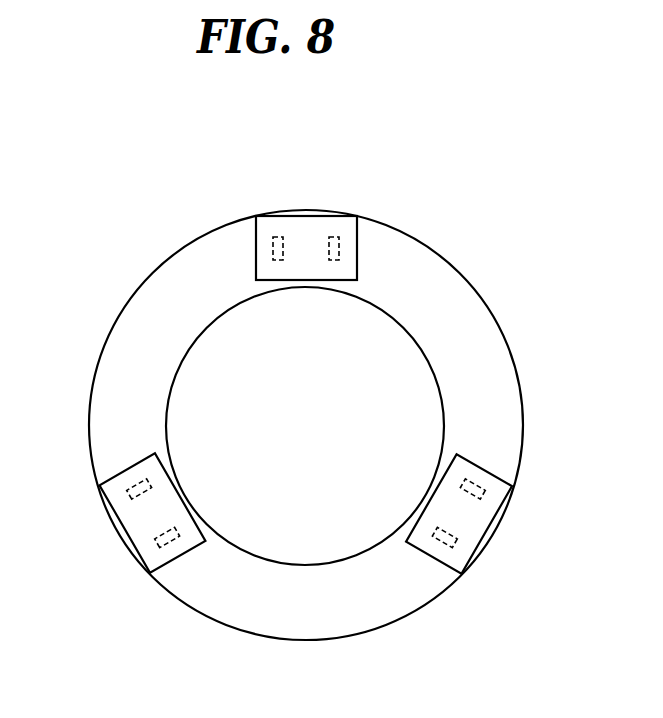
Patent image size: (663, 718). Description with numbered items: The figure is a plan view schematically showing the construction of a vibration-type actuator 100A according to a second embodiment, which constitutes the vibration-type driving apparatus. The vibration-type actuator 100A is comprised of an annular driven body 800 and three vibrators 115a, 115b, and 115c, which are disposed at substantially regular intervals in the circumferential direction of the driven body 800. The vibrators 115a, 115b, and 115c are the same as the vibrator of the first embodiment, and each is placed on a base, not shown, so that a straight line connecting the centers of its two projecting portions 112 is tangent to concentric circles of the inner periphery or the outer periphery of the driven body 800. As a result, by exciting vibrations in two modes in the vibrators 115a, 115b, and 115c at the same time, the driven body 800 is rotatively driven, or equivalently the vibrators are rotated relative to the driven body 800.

The vibration-type actuator 100A is at (132, 201).
The annular driven body 800 is at (492, 343).
The projecting portions 112 is at (337, 235).
The vibrator 115a is at (308, 228).
The vibrator 115b is at (133, 518).
The vibrator 115c is at (472, 528).